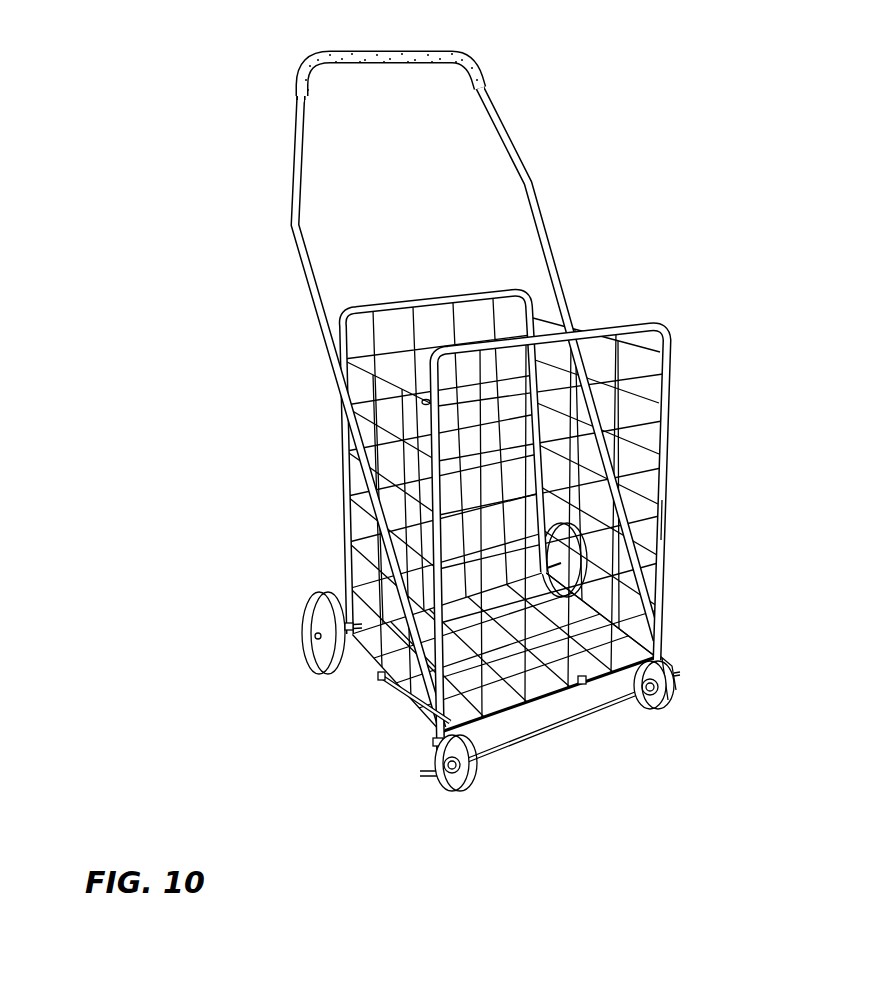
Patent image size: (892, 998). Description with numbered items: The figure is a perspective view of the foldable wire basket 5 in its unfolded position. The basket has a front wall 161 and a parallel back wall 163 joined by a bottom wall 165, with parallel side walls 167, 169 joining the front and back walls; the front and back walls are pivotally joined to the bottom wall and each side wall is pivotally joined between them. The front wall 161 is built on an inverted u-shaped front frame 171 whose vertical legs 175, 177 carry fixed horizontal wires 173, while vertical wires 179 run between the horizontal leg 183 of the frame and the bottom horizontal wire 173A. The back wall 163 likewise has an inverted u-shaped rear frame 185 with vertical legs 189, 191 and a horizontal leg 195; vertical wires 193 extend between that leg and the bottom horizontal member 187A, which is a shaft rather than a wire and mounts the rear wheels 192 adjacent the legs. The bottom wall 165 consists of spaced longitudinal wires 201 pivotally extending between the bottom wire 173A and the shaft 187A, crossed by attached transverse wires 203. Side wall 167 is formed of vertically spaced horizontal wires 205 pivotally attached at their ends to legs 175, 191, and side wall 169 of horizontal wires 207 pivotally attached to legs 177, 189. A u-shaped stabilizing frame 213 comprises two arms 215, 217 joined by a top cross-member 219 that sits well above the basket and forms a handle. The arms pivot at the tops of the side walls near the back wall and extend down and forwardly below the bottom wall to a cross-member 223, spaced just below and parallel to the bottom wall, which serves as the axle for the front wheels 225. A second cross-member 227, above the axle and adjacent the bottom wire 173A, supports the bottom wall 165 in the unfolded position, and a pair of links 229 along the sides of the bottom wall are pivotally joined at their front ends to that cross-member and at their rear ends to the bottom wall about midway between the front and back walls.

The foldable basket 5 is at (432, 371).
The stabilizing frame 213 is at (335, 78).
The top cross-member 219 is at (347, 55).
The arm 215 is at (577, 393).
The arm 217 is at (328, 410).
The rear frame 185 is at (379, 428).
The vertical leg 189 is at (502, 427).
The horizontal leg 195 is at (295, 294).
The back wall 163 is at (299, 467).
The side wall 167 is at (327, 521).
The horizontal wires 205 is at (322, 390).
The vertical leg 191 is at (324, 432).
The vertical wires 193 is at (325, 505).
The bottom horizontal member 187A is at (304, 575).
The rear wheels 192 is at (279, 622).
The transverse wires 203 is at (328, 675).
The links 229 is at (354, 712).
The vertical leg 175 is at (340, 763).
The second cross-member 227 is at (465, 744).
The bottom wall 165 is at (470, 785).
The cross-member 223 is at (554, 760).
The bottom horizontal wire 173A is at (548, 737).
The front wheels 225 is at (677, 715).
The longitudinal wires 201 is at (556, 652).
The vertical leg 177 is at (710, 522).
The vertical wires 179 is at (694, 504).
The horizontal wires 173 is at (649, 474).
The horizontal wires 207 is at (647, 400).
The front frame 171 is at (590, 551).
The front wall 161 is at (648, 493).
The side wall 169 is at (646, 333).
The horizontal leg 183 is at (599, 502).